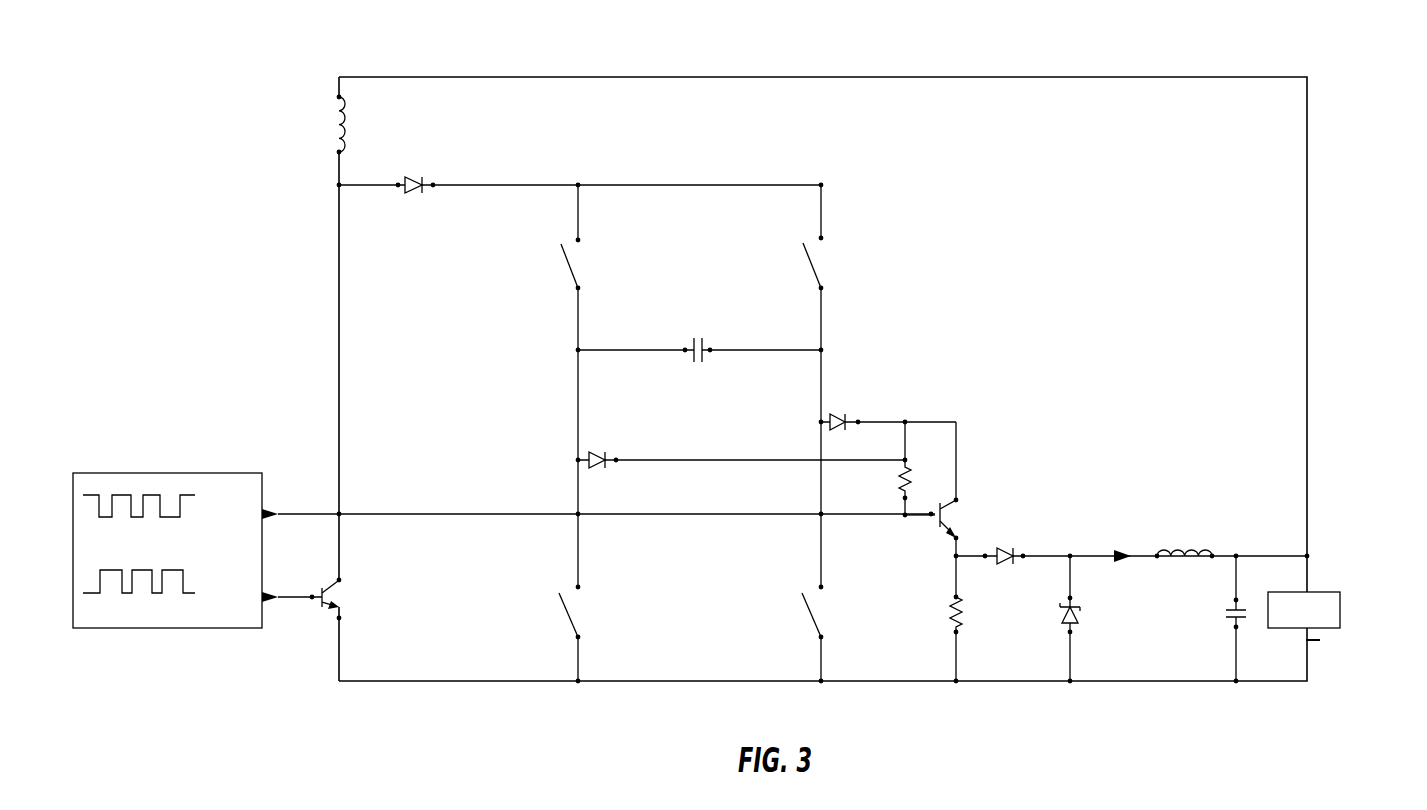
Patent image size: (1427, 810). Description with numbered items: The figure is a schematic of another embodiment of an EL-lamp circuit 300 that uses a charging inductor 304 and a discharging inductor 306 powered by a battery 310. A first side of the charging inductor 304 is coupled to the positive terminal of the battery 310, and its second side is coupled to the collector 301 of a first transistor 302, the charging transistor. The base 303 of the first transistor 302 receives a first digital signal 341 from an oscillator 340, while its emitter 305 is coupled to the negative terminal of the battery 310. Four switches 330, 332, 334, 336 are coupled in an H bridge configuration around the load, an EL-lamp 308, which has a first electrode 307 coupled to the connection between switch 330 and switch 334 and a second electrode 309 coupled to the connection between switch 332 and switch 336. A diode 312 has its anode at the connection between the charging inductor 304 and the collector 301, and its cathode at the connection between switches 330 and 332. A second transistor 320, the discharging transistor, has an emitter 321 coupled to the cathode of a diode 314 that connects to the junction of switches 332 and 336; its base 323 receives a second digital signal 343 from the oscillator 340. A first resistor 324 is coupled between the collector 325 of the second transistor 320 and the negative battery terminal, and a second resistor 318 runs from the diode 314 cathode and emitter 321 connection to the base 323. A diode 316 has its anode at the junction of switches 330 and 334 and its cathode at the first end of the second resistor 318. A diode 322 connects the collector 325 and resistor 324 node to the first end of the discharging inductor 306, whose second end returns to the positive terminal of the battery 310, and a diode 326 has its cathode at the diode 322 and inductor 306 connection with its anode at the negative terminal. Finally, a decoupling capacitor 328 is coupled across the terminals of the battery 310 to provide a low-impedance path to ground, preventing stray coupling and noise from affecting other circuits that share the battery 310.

The EL-lamp circuit 300 is at (1342, 76).
The collector 301 is at (341, 578).
The first transistor 302 is at (360, 589).
The base 303 is at (318, 590).
The charging inductor 304 is at (350, 131).
The emitter 305 is at (325, 612).
The discharging inductor 306 is at (1190, 545).
The first electrode 307 is at (688, 340).
The EL-lamp 308 is at (690, 366).
The second electrode 309 is at (725, 340).
The battery 310 is at (1343, 590).
The diode 312 is at (413, 198).
The diode 314 is at (843, 405).
The diode 316 is at (607, 470).
The second resistor 318 is at (898, 472).
The second transistor 320 is at (959, 502).
The emitter 321 is at (949, 500).
The diode 322 is at (1008, 543).
The base 323 is at (932, 521).
The first resistor 324 is at (945, 609).
The collector 325 is at (950, 542).
The diode 326 is at (1082, 617).
The decoupling capacitor 328 is at (1222, 592).
The switch S1 330 is at (558, 261).
The switch S2 332 is at (845, 243).
The switch S3 334 is at (560, 624).
The switch S4 336 is at (803, 621).
The oscillator 340 is at (182, 547).
The first digital signal 341 is at (185, 600).
The second digital signal 343 is at (153, 490).